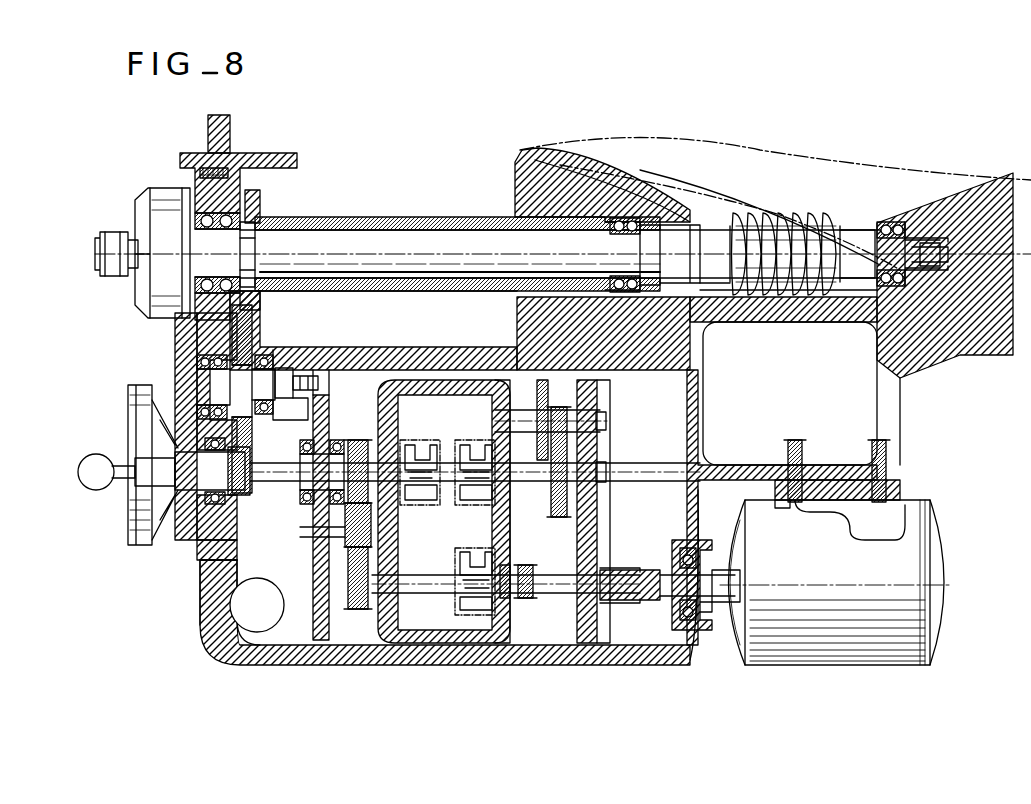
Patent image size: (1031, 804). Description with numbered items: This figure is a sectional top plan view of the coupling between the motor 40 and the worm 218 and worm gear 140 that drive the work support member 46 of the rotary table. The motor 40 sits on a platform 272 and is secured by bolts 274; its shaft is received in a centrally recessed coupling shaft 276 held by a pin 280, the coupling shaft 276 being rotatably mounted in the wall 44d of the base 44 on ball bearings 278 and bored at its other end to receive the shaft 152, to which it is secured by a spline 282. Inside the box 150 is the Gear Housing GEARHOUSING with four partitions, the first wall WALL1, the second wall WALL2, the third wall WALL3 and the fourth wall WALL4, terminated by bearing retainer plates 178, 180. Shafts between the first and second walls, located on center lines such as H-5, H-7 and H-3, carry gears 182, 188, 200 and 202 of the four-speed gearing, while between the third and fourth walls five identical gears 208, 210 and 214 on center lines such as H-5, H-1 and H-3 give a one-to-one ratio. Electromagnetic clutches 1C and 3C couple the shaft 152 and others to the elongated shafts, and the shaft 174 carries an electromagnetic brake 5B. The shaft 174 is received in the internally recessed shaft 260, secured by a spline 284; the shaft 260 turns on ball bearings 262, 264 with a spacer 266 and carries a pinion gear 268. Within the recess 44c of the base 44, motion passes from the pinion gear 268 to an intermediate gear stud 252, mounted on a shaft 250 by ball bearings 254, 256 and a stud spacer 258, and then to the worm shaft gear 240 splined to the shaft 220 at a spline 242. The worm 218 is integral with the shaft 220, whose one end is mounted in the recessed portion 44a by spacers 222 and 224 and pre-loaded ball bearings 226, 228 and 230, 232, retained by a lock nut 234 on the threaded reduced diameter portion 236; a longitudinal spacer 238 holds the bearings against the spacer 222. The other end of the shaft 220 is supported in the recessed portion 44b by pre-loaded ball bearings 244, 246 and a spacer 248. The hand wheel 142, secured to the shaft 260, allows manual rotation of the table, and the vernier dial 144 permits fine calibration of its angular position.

The work support member 46 is at (905, 185).
The recessed portion of the base 44a is at (720, 305).
The base 44 is at (420, 360).
The recessed portion of the base 44b is at (280, 195).
The recess of the base casting 44c is at (200, 580).
The wall of the base 44d is at (680, 665).
The longitudinal spacer 238 is at (386, 222).
The shaft 220 is at (405, 240).
The pre-loaded ball bearing member 226 is at (615, 242).
The pre-loaded ball bearing member 228 is at (628, 222).
The spacer 222 is at (655, 228).
The worm 218 is at (778, 218).
The worm gear 140 is at (810, 220).
The pre-loaded ball bearing member 230 is at (890, 222).
The pre-loaded ball bearing member 232 is at (915, 222).
The threaded reduced diameter portion 236 is at (948, 253).
The lock nut 234 is at (940, 268).
The spacer 224 is at (788, 293).
The pre-loaded ball bearing 244 is at (232, 205).
The worm shaft gear 240 is at (262, 212).
The spline 242 is at (258, 226).
The pre-loaded ball bearing 246 is at (200, 218).
The spacer 248 is at (185, 222).
The vernier dial 144 is at (95, 254).
The box 150 is at (440, 691).
The bearing retainer plate 180 is at (325, 603).
The platform 272 is at (905, 492).
The bolts 274 is at (875, 425).
The hand wheel 142 is at (135, 392).
The ball bearing 262 is at (170, 460).
The shaft 260 is at (212, 471).
The ball bearing 264 is at (268, 520).
The spacer 266 is at (280, 535).
The pinion gear 268 is at (238, 504).
The ball bearing 254 is at (200, 358).
The intermediate gear stud 252 is at (250, 335).
The ball bearing 256 is at (268, 372).
The stud spacer 258 is at (290, 375).
The shaft 250 is at (318, 383).
The spline 284 is at (312, 455).
The shaft 174 is at (318, 440).
The gear 214 is at (357, 445).
The gear 210 is at (372, 548).
The gear 208 is at (357, 609).
The shaft 152 is at (575, 590).
The gear 182 is at (527, 565).
The gear 202 is at (524, 555).
The gear 200 is at (537, 390).
The gear 188 is at (560, 407).
The coupling shaft 276 is at (660, 570).
The spline 282 is at (612, 568).
The pin 280 is at (670, 555).
The ball bearings 278 is at (680, 608).
The bearing retainer plate 178 is at (598, 600).
The motor 40 is at (840, 570).
The center line H-1 is at (395, 527).
The center line H-3 is at (604, 475).
The center line H-5 is at (550, 578).
The center line H-7 is at (604, 420).
The electromagnetic brake 5B is at (425, 423).
The electromagnetic clutch 3C is at (484, 428).
The electromagnetic clutch 1C is at (480, 538).
The Wall #1 WALL1 is at (585, 643).
The Wall #2 WALL2 is at (500, 643).
The Wall #3 WALL3 is at (385, 640).
The Wall #4 WALL4 is at (320, 640).
The Gear Housing GEARHOUSING is at (598, 392).